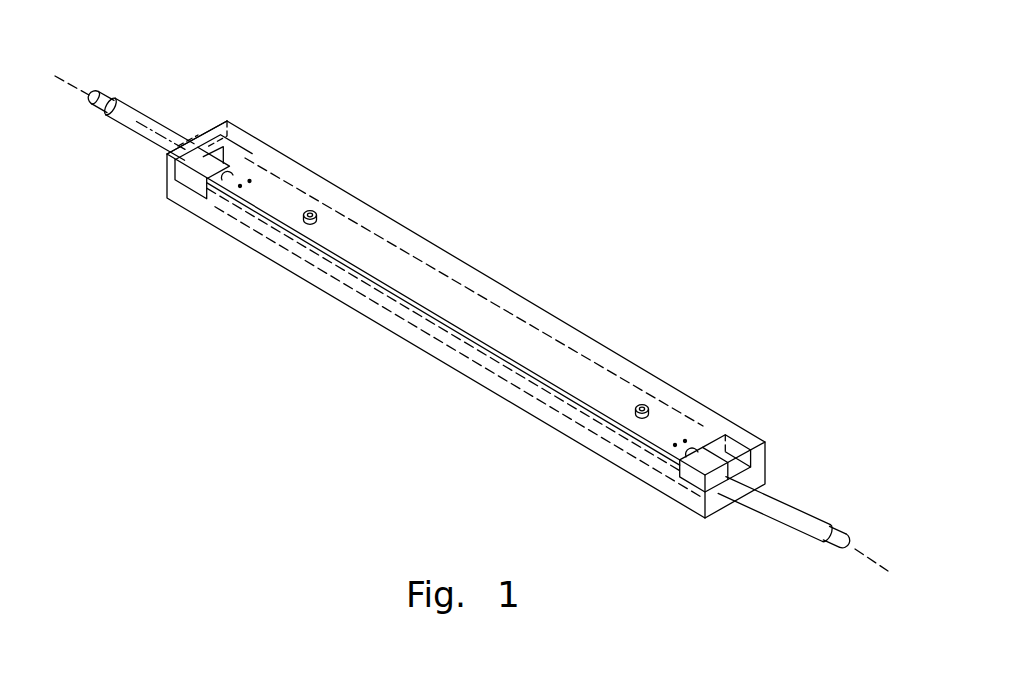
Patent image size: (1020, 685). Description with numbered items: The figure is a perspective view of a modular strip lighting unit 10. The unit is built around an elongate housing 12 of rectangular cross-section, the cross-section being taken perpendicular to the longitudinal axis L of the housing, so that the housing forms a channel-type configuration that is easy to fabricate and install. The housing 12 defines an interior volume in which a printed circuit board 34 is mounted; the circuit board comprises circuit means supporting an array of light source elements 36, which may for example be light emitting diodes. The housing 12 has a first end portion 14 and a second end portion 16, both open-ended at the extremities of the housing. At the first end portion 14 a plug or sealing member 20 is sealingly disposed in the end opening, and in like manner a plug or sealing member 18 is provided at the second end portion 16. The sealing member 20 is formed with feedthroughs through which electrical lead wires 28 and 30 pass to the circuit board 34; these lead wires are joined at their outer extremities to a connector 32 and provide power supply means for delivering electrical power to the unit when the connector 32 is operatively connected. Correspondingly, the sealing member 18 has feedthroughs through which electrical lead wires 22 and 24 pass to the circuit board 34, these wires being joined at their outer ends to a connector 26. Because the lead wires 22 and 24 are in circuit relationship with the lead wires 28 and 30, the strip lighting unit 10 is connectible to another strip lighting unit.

The modular strip lighting unit 10 is at (292, 63).
The housing 12 is at (493, 282).
The first end portion 14 is at (260, 148).
The second end portion 16 is at (720, 412).
The sealing member 18 is at (767, 442).
The sealing member 20 is at (213, 165).
The electrical lead wire 22 is at (773, 495).
The electrical lead wire 24 is at (780, 512).
The connector 26 is at (840, 530).
The electrical lead wire 28 is at (140, 117).
The electrical lead wire 30 is at (113, 120).
The connector 32 is at (95, 102).
The printed circuit board 34 is at (567, 368).
The light source elements 36 is at (643, 405).
The longitudinal axis L is at (469, 321).